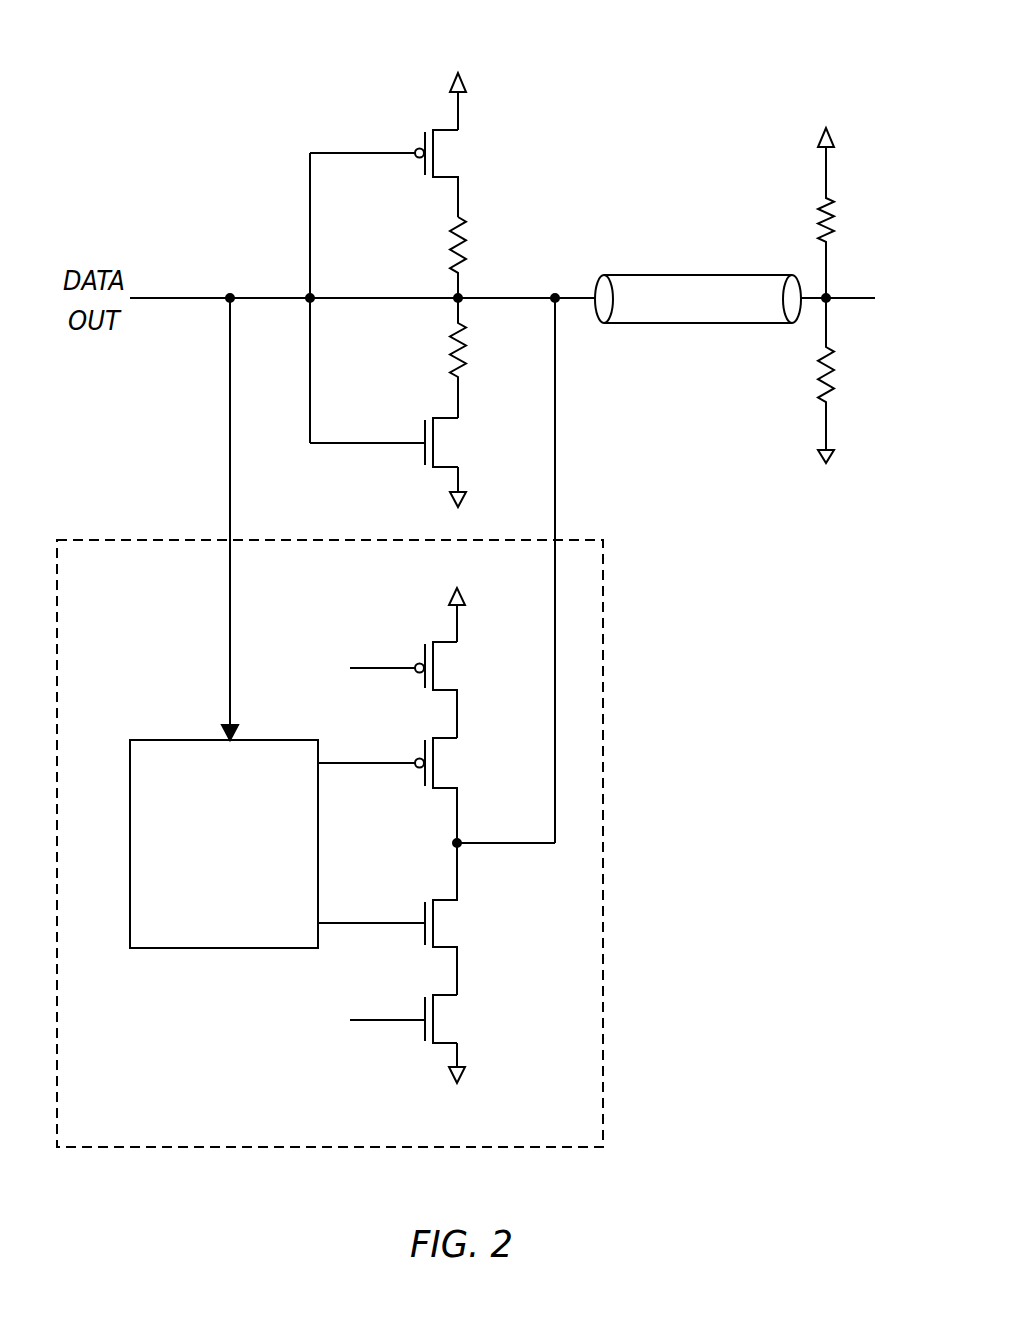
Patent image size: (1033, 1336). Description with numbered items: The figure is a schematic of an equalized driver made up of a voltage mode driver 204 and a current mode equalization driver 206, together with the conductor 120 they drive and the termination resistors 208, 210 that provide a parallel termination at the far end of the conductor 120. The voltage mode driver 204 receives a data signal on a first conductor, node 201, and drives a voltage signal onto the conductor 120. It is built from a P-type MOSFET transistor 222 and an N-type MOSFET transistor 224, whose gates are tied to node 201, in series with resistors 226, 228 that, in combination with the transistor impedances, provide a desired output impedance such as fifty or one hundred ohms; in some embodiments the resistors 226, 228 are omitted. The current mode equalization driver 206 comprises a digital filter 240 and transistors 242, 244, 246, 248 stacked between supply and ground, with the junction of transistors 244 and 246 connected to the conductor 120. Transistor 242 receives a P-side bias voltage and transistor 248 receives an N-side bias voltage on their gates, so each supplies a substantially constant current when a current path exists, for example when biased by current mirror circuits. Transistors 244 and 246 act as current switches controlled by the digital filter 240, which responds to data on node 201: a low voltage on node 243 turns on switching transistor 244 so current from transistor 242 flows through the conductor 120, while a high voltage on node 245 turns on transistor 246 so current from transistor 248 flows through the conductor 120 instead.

The conductor 120 is at (627, 275).
The node 201 is at (254, 297).
The voltage mode driver 204 is at (483, 422).
The current mode equalization driver 206 is at (370, 722).
The termination resistor 208 is at (822, 210).
The termination resistor 210 is at (817, 372).
The transistor 222 is at (443, 130).
The transistor 224 is at (443, 418).
The resistor 226 is at (452, 250).
The resistor 228 is at (452, 330).
The digital filter 240 is at (235, 948).
The transistor 242 is at (433, 658).
The node 243 is at (390, 763).
The switching transistor 244 is at (433, 752).
The node 245 is at (390, 921).
The switching transistor 246 is at (433, 913).
The transistor 248 is at (433, 1008).